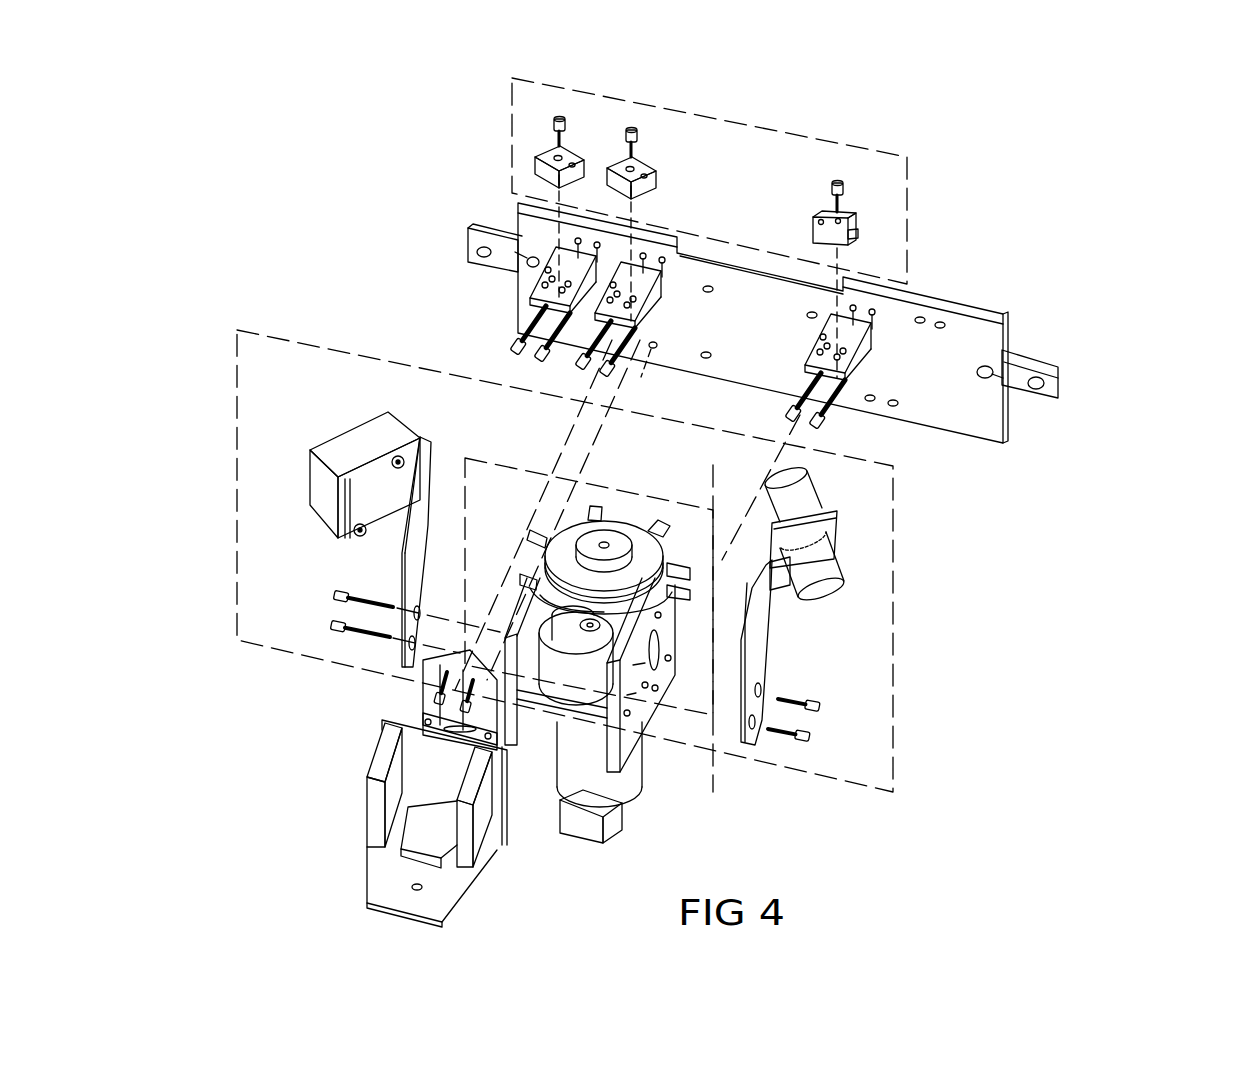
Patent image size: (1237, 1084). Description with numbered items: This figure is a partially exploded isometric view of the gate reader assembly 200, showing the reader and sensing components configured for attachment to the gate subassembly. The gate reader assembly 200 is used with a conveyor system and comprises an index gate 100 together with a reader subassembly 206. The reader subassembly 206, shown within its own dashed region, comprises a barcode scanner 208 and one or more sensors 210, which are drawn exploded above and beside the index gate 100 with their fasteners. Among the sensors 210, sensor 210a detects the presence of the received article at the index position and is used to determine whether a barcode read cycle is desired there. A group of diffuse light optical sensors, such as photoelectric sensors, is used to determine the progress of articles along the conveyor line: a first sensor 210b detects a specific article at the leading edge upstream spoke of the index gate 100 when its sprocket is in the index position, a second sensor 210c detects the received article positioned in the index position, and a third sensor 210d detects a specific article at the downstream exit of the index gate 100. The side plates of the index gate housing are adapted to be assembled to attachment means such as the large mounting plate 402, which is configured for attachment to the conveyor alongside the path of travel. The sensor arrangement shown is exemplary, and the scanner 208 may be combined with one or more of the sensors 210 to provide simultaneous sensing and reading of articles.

The index gate 100 is at (657, 740).
The gate reader assembly 200 is at (1035, 486).
The reader subassembly 206 is at (505, 165).
The barcode scanner 208 is at (444, 458).
The sensors 210 is at (784, 470).
The sensor 210a is at (828, 593).
The first sensor 210b is at (852, 222).
The second sensor 210c is at (645, 187).
The third sensor 210d is at (540, 162).
The mounting plate 402 is at (522, 318).